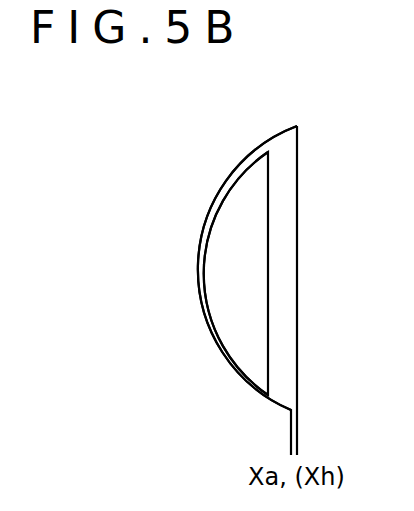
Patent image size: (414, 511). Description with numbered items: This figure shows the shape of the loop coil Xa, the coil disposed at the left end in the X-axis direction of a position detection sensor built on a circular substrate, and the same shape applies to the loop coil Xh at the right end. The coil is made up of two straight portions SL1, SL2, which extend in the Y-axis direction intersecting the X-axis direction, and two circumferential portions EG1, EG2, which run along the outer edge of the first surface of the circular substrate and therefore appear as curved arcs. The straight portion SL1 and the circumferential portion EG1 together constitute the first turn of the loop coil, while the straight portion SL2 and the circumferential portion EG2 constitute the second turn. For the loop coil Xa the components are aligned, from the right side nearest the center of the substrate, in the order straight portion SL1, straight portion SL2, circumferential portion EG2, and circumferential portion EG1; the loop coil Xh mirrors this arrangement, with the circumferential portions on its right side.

The straight portion SL1 is at (297, 213).
The straight portion SL2 is at (268, 336).
The circumferential portion EG1 is at (197, 281).
The circumferential portion EG2 is at (217, 320).